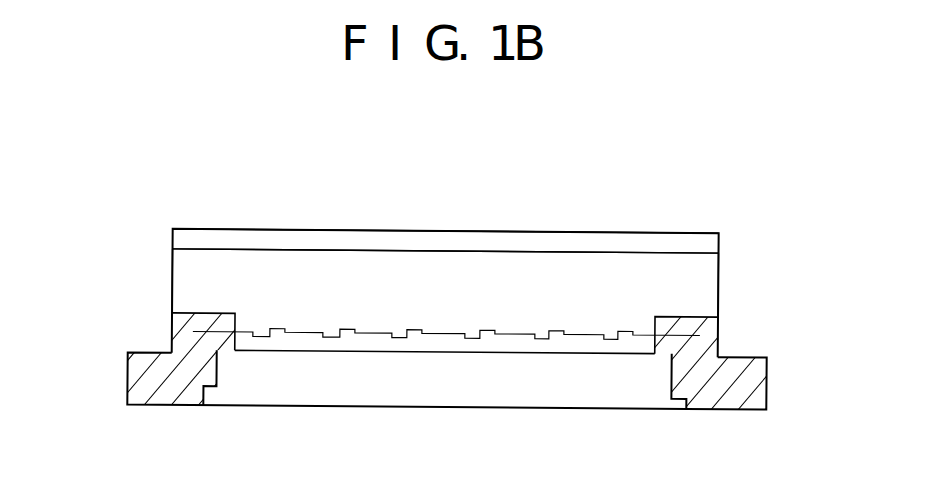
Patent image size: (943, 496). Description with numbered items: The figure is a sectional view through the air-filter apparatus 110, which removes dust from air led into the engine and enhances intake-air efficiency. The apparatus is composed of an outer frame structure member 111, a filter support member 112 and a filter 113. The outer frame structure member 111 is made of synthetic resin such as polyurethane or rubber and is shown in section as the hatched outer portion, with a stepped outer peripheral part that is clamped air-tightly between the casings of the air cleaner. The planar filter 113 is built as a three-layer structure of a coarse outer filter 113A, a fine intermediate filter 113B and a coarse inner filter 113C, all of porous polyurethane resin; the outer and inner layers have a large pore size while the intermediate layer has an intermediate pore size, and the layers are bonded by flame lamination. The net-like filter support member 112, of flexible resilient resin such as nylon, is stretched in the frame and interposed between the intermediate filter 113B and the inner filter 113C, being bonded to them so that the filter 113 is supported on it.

The air-filter apparatus 110 is at (146, 242).
The outer frame structure member 111 is at (747, 383).
The filter support member 112 is at (296, 350).
The filter 113 is at (430, 230).
The coarse outer filter 113A is at (665, 245).
The fine intermediate filter 113B is at (697, 285).
The coarse inner filter 113C is at (512, 350).